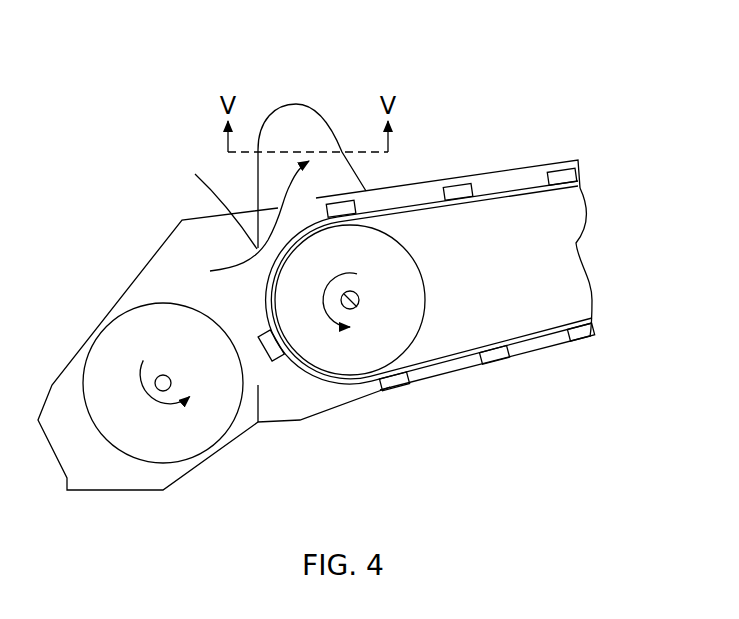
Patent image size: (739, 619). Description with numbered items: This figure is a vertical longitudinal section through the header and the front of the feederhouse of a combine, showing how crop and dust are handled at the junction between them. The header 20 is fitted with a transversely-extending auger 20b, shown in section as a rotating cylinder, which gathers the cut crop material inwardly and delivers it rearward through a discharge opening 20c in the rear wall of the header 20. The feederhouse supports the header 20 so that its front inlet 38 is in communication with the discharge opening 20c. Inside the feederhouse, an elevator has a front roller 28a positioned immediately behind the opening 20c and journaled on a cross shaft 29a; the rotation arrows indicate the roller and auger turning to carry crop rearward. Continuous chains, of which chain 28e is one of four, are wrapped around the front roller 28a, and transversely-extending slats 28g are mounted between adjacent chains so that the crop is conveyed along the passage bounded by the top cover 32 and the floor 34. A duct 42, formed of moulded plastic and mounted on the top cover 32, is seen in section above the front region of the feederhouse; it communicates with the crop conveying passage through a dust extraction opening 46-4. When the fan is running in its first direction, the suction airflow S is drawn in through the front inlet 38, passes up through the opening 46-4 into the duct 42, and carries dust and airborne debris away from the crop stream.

The header 20 is at (150, 252).
The transversely-extending auger 20b is at (205, 423).
The discharge opening 20c is at (264, 370).
The front roller 28a is at (421, 331).
The continuous chain 28e is at (551, 326).
The slats 28g is at (470, 178).
The cross shaft 29a is at (356, 309).
The top cover 32 is at (435, 180).
The floor 34 is at (440, 377).
The front inlet 38 is at (210, 199).
The duct 42 is at (297, 103).
The dust extraction opening 46-4 is at (309, 194).
The suction airflow S is at (237, 273).